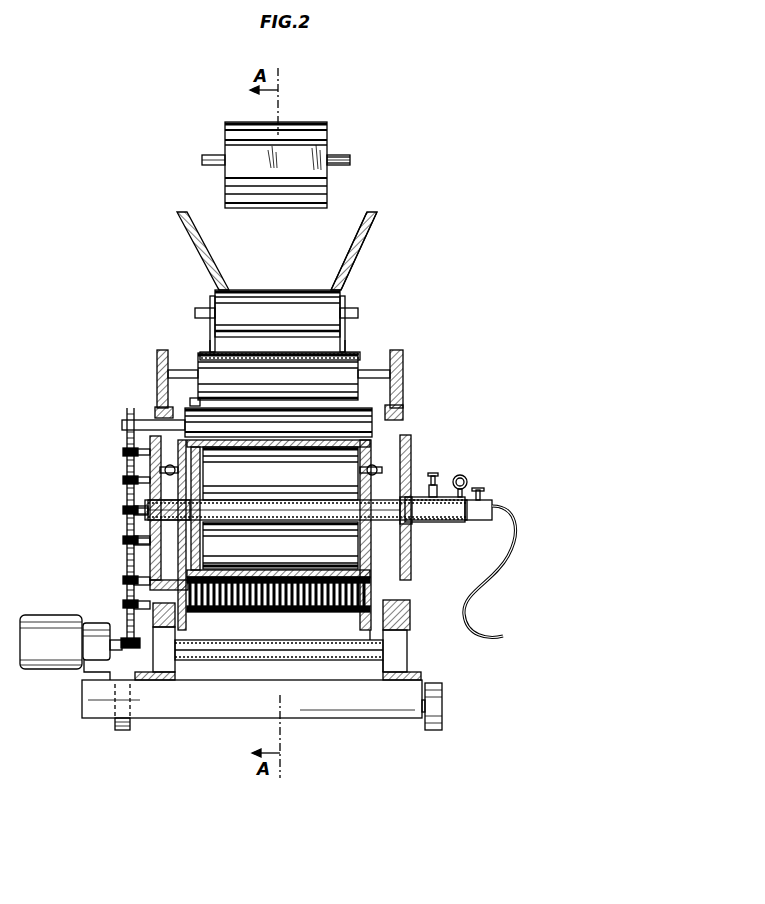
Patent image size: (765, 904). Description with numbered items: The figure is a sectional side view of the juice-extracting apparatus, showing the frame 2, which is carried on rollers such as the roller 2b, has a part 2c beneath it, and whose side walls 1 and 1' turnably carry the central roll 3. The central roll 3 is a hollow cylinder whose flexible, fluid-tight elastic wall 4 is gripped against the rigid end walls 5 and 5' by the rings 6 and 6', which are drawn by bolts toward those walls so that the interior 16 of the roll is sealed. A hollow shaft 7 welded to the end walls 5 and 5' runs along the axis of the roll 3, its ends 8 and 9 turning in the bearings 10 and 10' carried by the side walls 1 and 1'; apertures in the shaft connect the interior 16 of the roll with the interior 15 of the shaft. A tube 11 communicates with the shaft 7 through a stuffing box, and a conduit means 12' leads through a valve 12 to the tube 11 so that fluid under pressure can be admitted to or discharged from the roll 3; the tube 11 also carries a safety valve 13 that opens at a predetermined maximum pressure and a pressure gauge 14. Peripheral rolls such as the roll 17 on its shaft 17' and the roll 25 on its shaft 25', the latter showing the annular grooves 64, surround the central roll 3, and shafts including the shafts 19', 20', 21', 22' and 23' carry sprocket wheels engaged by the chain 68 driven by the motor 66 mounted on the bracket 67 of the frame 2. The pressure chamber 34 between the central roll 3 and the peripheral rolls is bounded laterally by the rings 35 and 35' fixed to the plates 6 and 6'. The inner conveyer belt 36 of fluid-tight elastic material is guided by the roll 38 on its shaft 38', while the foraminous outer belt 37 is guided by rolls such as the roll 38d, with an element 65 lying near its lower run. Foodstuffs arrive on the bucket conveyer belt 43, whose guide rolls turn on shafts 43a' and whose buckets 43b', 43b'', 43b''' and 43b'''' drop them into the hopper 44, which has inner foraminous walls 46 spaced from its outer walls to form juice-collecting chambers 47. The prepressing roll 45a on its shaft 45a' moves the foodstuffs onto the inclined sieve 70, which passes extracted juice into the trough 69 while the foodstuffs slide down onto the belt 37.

The side wall 1 is at (151, 366).
The side wall 1' is at (408, 372).
The frame 2 is at (210, 718).
The roller 2b is at (442, 700).
The bolt 2c is at (122, 730).
The central roll 3 is at (194, 550).
The flexible elastic wall 4 is at (280, 464).
The rigid end wall 5 is at (195, 479).
The rigid end wall 5' is at (352, 479).
The ring 6 is at (127, 500).
The ring 6' is at (421, 502).
The hollow shaft 7 is at (278, 516).
The shaft end 8 is at (148, 510).
The shaft end 9 is at (412, 518).
The bearing 10 is at (147, 535).
The bearing 10' is at (408, 535).
The tube 11 is at (454, 516).
The valve 12 is at (489, 484).
The conduit means 12' is at (504, 562).
The safety valve 13 is at (438, 473).
The pressure gauge 14 is at (464, 476).
The interior of shaft 15 is at (412, 524).
The interior of roll 16 is at (150, 541).
The peripheral roll 17 is at (255, 407).
The shaft 17' is at (115, 520).
The shaft 19' is at (119, 450).
The shaft 20' is at (115, 481).
The shaft 21' is at (115, 511).
The shaft 22' is at (117, 544).
The shaft 23' is at (117, 569).
The peripheral roll 25 is at (416, 640).
The shaft 25' is at (139, 581).
The pressure chamber 34 is at (300, 574).
The ring 35 is at (149, 401).
The ring 35' is at (420, 417).
The inner conveyer belt 36 is at (360, 356).
The outer conveyer belt 37 is at (328, 660).
The guide roll 38 is at (269, 366).
The shaft 38' is at (258, 366).
The guide roll 38d is at (374, 660).
The endless conveyer belt 43 is at (240, 152).
The shaft 43a' is at (364, 151).
The roller band 43b' is at (293, 110).
The roller band 43b'' is at (306, 128).
The roller band 43b''' is at (312, 175).
The roller band 43b'''' is at (314, 196).
The hopper 44 is at (196, 233).
The roll 45a is at (311, 306).
The shaft 45a' is at (375, 301).
The inner foraminous wall 46 is at (362, 242).
The chamber 47 is at (352, 257).
The annular groove 64 is at (278, 612).
The tray bottom 65 is at (206, 652).
The motor 66 is at (50, 618).
The bracket 67 is at (82, 676).
The chain 68 is at (134, 605).
The trough 69 is at (208, 318).
The sieve 70 is at (346, 343).